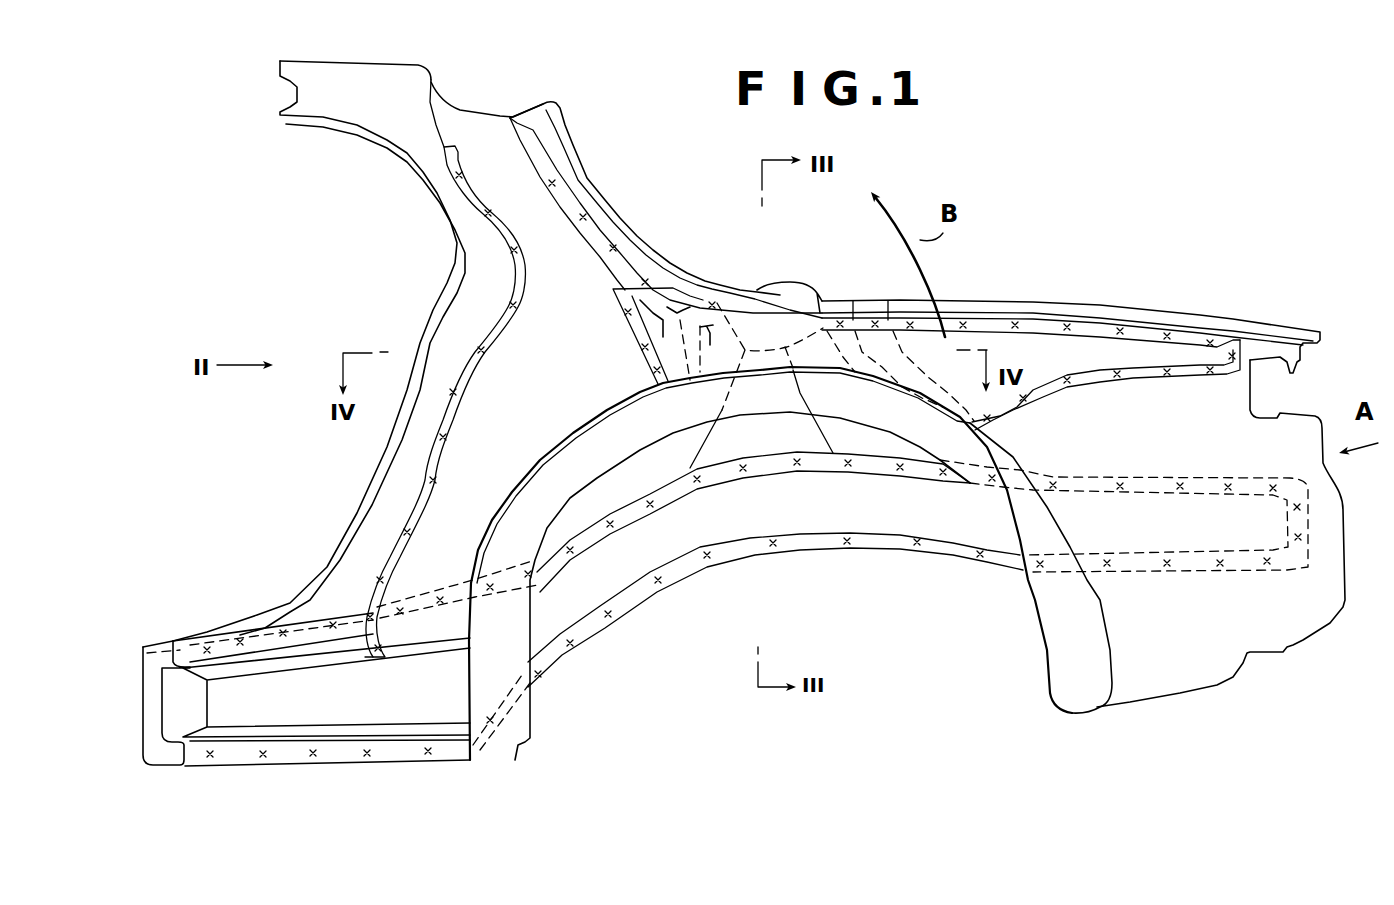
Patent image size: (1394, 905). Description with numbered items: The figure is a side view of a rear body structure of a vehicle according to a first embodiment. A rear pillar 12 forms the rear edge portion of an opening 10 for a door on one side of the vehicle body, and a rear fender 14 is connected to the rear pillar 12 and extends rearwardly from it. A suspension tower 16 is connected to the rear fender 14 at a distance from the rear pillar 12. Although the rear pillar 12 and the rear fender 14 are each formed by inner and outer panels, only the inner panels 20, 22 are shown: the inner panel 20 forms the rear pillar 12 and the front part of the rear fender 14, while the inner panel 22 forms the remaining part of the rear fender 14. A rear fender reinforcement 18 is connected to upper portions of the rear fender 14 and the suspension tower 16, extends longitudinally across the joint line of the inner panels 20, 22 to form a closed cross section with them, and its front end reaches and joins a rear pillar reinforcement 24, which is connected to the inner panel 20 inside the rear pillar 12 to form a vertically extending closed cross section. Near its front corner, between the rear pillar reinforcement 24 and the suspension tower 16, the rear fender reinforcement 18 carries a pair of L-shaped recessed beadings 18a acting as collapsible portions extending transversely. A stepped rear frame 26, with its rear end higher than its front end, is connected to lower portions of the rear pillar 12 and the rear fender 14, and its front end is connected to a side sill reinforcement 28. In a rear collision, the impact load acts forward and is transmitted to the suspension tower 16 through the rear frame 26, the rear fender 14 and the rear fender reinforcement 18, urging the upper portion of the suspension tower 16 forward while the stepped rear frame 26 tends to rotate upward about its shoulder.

The opening 10 is at (452, 264).
The rear pillar 12 is at (619, 185).
The rear fender 14 is at (976, 289).
The suspension tower 16 is at (820, 300).
The rear fender reinforcement 18 is at (1033, 347).
The L-shaped recessed beadings 18a is at (710, 315).
The inner panel 20 is at (670, 267).
The inner panel 22 is at (1125, 310).
The rear pillar reinforcement 24 is at (540, 337).
The rear frame 26 is at (814, 560).
The side sill reinforcement 28 is at (397, 707).